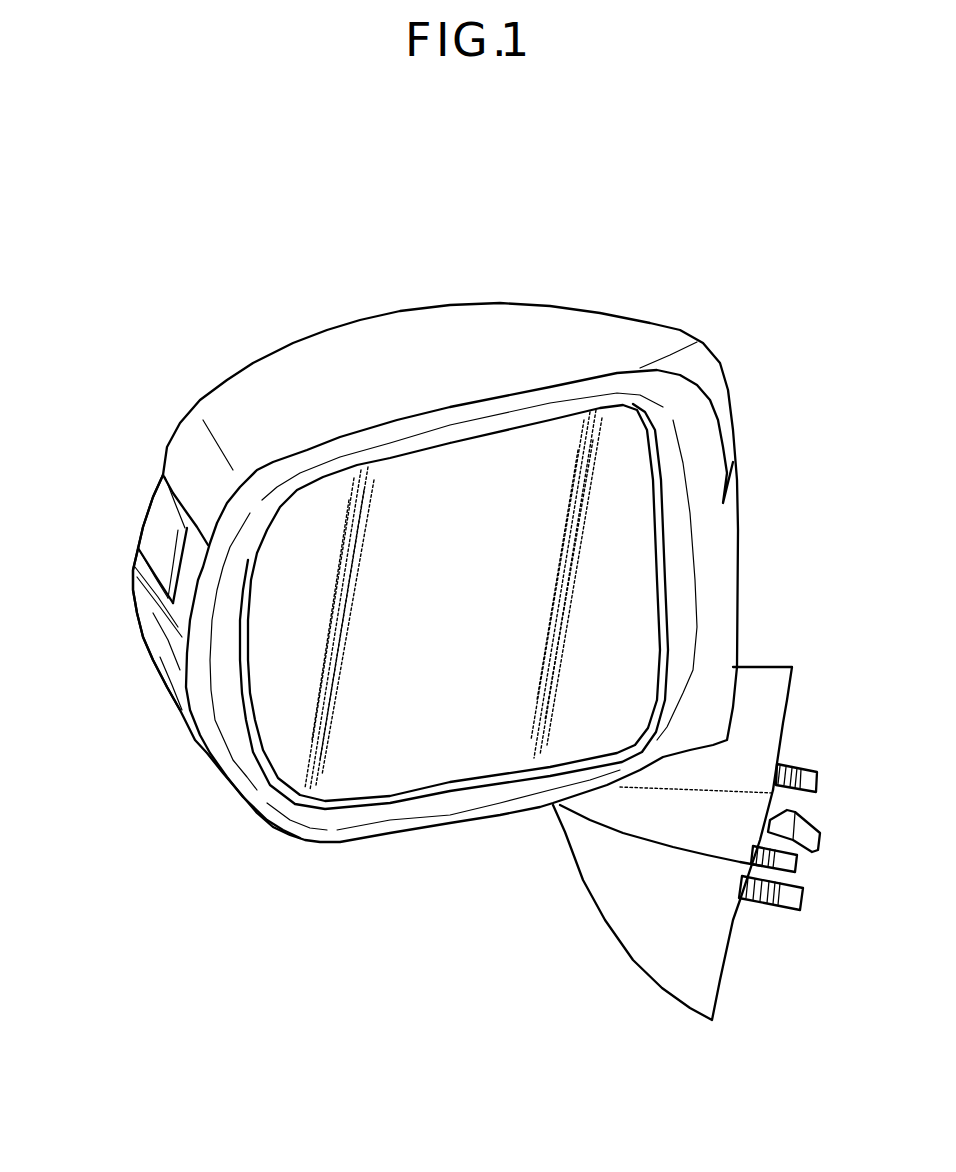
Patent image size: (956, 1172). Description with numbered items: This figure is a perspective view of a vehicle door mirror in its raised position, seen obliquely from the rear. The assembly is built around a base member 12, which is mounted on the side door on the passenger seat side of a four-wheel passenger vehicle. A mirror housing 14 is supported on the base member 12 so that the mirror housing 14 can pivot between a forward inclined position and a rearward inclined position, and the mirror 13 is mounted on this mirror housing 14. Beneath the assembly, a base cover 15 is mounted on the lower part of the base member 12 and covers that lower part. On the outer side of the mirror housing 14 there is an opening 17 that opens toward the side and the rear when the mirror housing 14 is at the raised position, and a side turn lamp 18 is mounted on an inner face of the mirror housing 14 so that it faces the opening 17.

The base member 12 is at (720, 759).
The mirror 13 is at (478, 613).
The mirror housing 14 is at (435, 537).
The base cover 15 is at (658, 905).
The opening 17 is at (148, 556).
The side turn lamp 18 is at (120, 593).